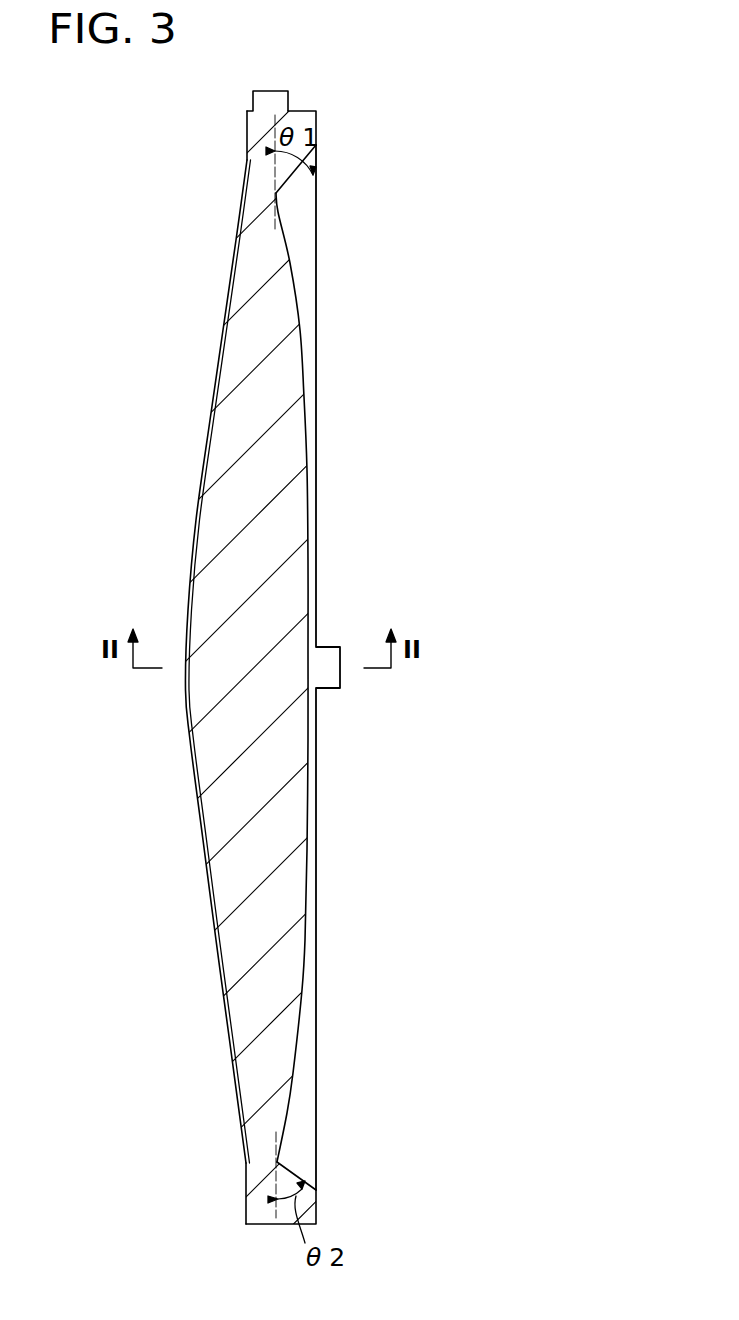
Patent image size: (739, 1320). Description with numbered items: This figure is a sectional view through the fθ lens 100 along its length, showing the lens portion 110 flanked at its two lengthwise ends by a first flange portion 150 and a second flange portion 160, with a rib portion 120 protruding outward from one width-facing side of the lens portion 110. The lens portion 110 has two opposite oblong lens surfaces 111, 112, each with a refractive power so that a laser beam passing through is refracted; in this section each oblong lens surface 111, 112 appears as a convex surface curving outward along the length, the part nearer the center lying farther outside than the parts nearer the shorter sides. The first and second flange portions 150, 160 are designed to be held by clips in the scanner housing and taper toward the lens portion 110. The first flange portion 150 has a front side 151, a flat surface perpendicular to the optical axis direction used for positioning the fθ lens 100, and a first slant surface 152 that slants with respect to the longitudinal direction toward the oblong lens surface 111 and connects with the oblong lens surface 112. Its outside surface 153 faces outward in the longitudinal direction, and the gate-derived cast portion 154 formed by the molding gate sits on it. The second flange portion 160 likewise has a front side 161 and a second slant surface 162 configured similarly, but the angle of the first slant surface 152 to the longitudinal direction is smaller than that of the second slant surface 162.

The fθ lens 100 is at (529, 144).
The lens portion 110 is at (245, 943).
The oblong lens surface 111 is at (190, 767).
The oblong lens surface 112 is at (308, 800).
The rib portion 120 is at (307, 1115).
The first flange portion 150 is at (255, 135).
The front side 151 is at (247, 127).
The first slant surface 152 is at (288, 182).
The outside surface 153 is at (302, 110).
The gate-derived cast portion 154 is at (265, 90).
The second flange portion 160 is at (263, 1188).
The front side 161 is at (246, 1207).
The second slant surface 162 is at (295, 1171).